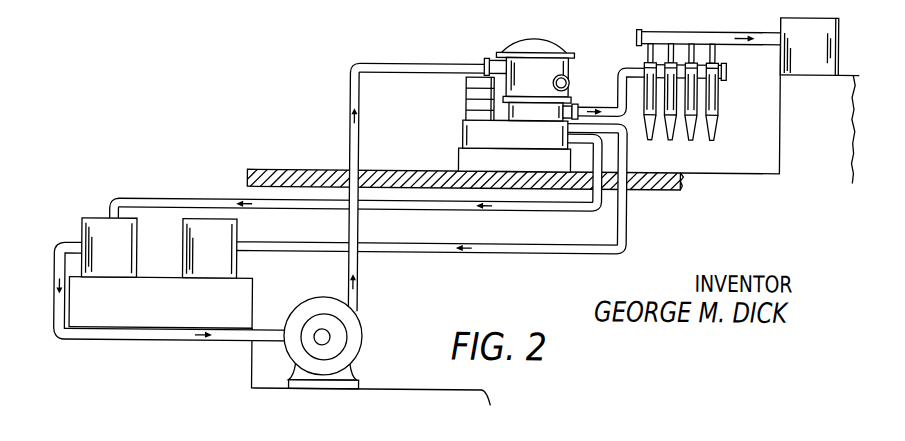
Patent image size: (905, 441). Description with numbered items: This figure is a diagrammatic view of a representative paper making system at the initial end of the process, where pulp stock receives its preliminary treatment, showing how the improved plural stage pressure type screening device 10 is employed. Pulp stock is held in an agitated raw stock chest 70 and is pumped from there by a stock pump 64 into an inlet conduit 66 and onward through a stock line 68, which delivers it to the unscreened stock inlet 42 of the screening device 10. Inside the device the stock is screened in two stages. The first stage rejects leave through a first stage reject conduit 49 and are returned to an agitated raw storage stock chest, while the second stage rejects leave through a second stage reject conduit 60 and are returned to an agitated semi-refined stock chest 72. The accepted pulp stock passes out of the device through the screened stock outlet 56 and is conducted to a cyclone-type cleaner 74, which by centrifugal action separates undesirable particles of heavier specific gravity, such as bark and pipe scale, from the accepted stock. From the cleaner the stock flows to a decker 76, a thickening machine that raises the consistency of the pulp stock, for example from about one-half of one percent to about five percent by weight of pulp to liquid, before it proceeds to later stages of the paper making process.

The plural stage screening device 10 is at (556, 45).
The unscreened stock inlet 42 is at (484, 59).
The first stage reject conduit 49 is at (580, 212).
The screened stock outlet 56 is at (578, 104).
The second stage reject conduit 60 is at (628, 226).
The stock pump 64 is at (364, 343).
The inlet conduit 66 is at (268, 344).
The stock line 68 is at (359, 263).
The agitated raw stock chest 70 is at (112, 255).
The agitated semi-refined stock chest 72 is at (222, 243).
The cyclone-type cleaner 74 is at (713, 103).
The decker 76 is at (812, 32).